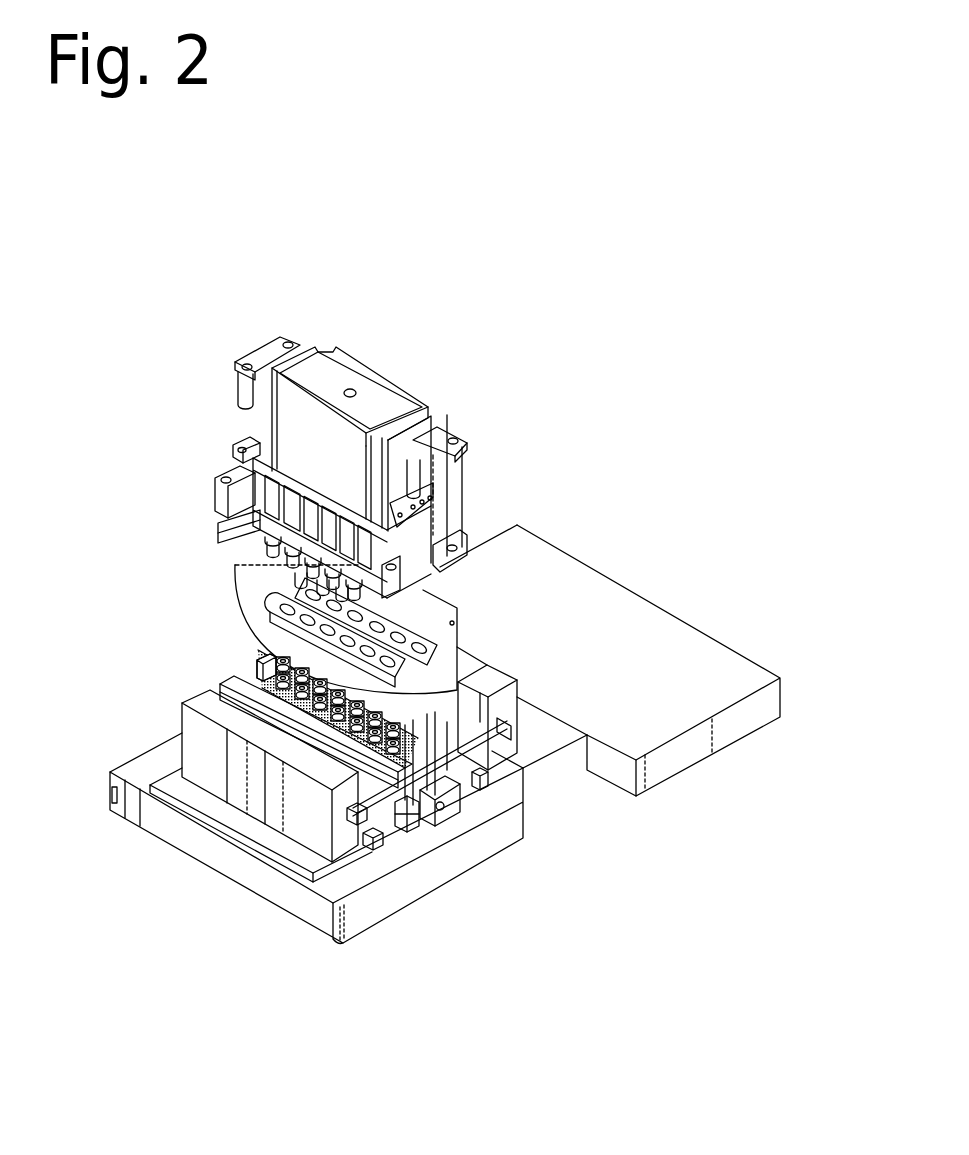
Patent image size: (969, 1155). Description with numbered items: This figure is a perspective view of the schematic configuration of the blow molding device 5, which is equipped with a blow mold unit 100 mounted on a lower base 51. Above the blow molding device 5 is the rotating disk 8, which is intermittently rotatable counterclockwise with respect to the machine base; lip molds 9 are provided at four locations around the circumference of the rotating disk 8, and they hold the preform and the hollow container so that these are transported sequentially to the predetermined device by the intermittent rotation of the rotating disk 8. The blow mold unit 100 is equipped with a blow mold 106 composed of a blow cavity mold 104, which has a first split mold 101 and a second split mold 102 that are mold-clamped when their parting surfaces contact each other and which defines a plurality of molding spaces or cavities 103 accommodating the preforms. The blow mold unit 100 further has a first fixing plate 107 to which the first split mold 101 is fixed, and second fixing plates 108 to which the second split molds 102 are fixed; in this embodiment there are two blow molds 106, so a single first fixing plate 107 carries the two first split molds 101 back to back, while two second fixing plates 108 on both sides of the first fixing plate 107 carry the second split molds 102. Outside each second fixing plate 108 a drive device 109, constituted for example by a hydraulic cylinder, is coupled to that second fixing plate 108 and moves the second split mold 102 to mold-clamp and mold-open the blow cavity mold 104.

The blow molding device 5 is at (650, 258).
The rotating disk 8 is at (247, 580).
The lip mold 9 is at (262, 598).
The lower base 51 is at (708, 663).
The blow mold unit 100 is at (369, 787).
The first split mold 101 is at (402, 832).
The second split mold 102 is at (372, 850).
The molding space (cavity) 103 is at (262, 663).
The blow cavity mold 104 is at (316, 891).
The blow mold 106 is at (483, 802).
The first fixing plate 107 is at (435, 745).
The second fixing plate 108 is at (237, 675).
The drive device 109 is at (496, 682).